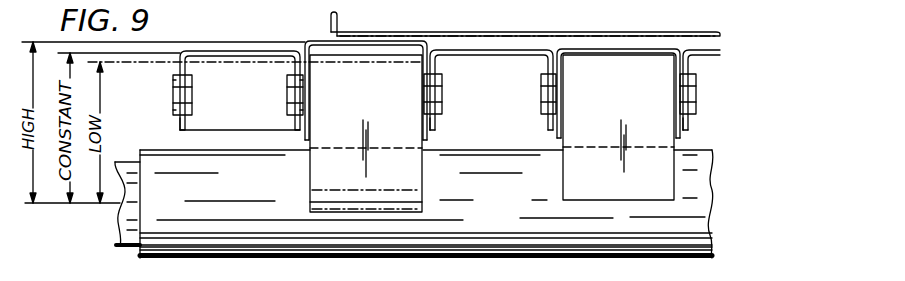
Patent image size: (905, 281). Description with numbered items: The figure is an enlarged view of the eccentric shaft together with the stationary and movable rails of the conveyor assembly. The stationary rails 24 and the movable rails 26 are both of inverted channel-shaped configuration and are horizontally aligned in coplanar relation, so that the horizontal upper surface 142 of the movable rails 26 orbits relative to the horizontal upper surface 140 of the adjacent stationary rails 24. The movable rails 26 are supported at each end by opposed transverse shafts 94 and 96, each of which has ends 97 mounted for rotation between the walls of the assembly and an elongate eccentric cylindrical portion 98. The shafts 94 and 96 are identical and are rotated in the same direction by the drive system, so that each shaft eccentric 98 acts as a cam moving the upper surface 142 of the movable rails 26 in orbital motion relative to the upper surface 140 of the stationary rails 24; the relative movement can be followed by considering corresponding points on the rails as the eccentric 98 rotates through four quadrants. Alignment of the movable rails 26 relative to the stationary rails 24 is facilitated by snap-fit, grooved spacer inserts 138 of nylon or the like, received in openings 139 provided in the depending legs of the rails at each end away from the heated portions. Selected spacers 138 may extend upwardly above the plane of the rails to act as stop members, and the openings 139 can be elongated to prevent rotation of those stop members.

The stationary rail 24 is at (193, 116).
The movable rail 26 is at (310, 130).
The transverse shaft 94 is at (513, 197).
The transverse shaft 96 is at (510, 227).
The shaft end 97 is at (118, 247).
The eccentric cylindrical portion 98 is at (300, 257).
The grooved spacer insert 138 is at (287, 88).
The opening 139 is at (173, 101).
The horizontal upper surface 140 is at (240, 50).
The horizontal upper surface 142 is at (398, 49).